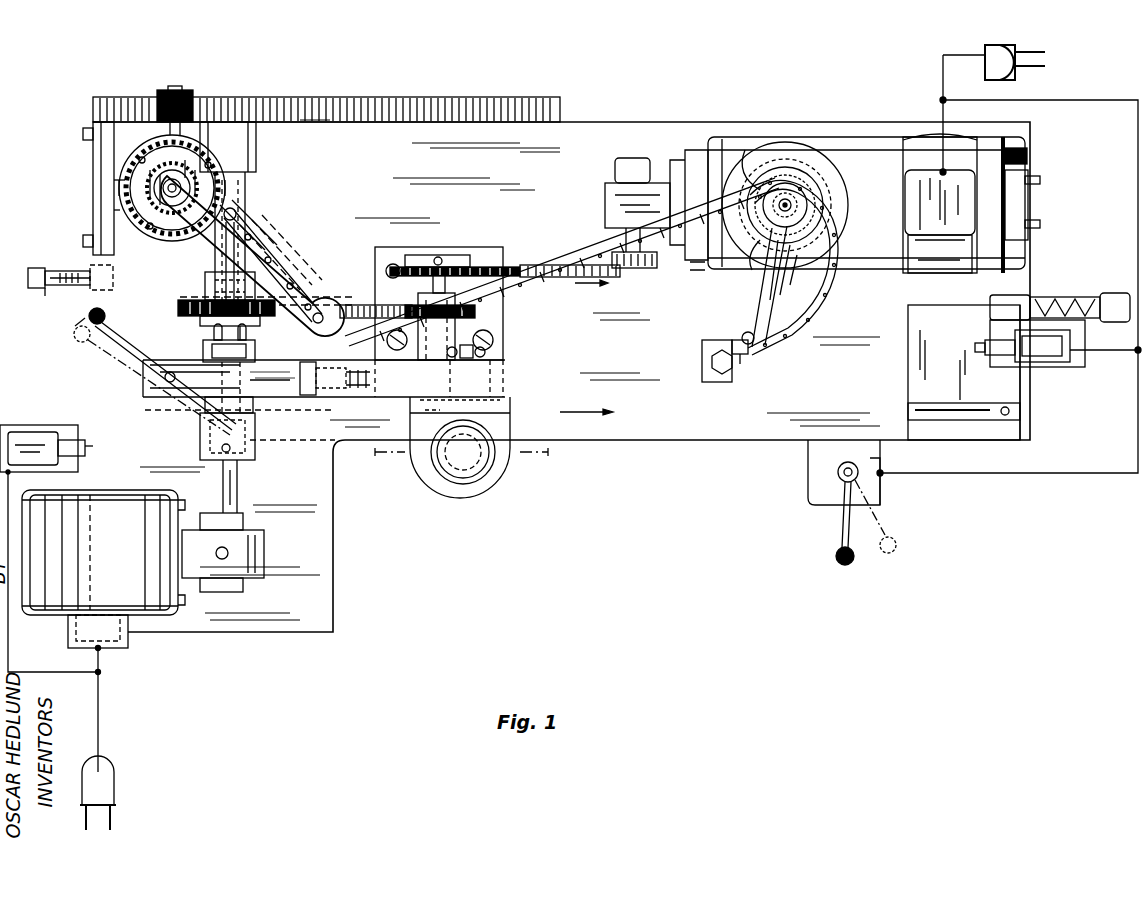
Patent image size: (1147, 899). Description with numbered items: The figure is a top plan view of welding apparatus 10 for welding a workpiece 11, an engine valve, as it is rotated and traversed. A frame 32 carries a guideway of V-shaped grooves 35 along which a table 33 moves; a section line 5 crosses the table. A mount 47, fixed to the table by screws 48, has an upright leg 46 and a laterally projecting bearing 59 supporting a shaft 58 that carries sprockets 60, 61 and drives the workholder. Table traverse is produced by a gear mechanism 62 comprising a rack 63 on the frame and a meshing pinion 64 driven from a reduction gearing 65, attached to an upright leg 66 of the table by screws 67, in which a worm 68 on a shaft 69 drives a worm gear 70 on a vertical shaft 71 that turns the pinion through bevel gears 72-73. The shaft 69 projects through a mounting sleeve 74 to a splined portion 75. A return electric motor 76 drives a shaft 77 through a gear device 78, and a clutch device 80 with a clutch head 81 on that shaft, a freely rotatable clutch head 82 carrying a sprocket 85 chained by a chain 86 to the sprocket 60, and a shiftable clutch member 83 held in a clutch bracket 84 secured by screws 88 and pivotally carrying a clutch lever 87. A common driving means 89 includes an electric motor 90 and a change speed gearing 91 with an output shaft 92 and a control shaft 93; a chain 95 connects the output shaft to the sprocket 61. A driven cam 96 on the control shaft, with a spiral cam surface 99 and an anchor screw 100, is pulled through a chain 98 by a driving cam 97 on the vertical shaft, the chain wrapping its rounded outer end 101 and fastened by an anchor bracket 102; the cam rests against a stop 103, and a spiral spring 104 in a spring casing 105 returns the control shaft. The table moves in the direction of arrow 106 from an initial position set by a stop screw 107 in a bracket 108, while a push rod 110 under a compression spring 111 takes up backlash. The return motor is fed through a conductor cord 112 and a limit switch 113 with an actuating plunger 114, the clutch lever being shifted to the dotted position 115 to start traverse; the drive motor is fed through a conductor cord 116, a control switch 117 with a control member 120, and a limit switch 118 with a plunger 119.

The section line 5- 5 is at (453, 450).
The welding apparatus 10 is at (678, 440).
The workpiece 11 is at (485, 480).
The frame 32 is at (1005, 435).
The table 33 is at (780, 432).
The V-shaped grooves 35 is at (1028, 162).
The upright leg 46 is at (503, 380).
The mount 47 is at (503, 320).
The screws 48 is at (486, 352).
The shaft 58 is at (390, 270).
The bearing 59 is at (493, 340).
The sprocket 60 is at (475, 308).
The sprocket 61 is at (462, 240).
The gear mechanism 62 is at (262, 152).
The rack 63 is at (420, 97).
The pinion 64 is at (193, 92).
The reduction gearing 65 is at (172, 230).
The upright leg 66 is at (95, 172).
The screws 67 is at (83, 134).
The worm 68 is at (248, 180).
The shaft 69 is at (205, 286).
The worm gear 70 is at (115, 210).
The vertical shaft 71 is at (175, 213).
The bevel gears 72-73 is at (115, 190).
The mounting sleeve 74 is at (215, 262).
The splined portion 75 is at (214, 333).
The electric motor 76 is at (110, 490).
The shaft 77 is at (237, 490).
The gear device 78 is at (264, 555).
The clutch device 80 is at (172, 420).
The clutch head 81 is at (200, 452).
The clutch head 82 is at (268, 280).
The clutch member 83 is at (255, 352).
The clutch bracket 84 is at (275, 392).
The sprocket 85 is at (178, 310).
The chain 86 is at (355, 305).
The clutch lever 87 is at (155, 377).
The screws 88 is at (300, 377).
The common driving means 89 is at (750, 133).
The electric motor 90 is at (970, 140).
The change speed gearing 91 is at (830, 140).
The output shaft 92 is at (657, 260).
The control shaft 93 is at (755, 275).
The chain 95 is at (521, 265).
The driven cam 96 is at (760, 300).
The driving cam 97 is at (330, 265).
The chain 98 is at (590, 240).
The cam surface 99 is at (850, 300).
The anchor screw 100 is at (742, 338).
The rounded outer end 101 is at (316, 312).
The anchor bracket 102 is at (248, 225).
The stop 103 is at (740, 360).
The spiral spring 104 is at (718, 272).
The spring casing 105 is at (745, 135).
The directional arrow 106 is at (595, 415).
The stop screw 107 is at (72, 290).
The bracket 108 is at (66, 262).
The push rod 110 is at (965, 308).
The compression spring 111 is at (1083, 288).
The conductor cord 112 is at (99, 733).
The limit switch 113 is at (35, 442).
The actuating plunger 114 is at (85, 448).
The dotted line position 115 is at (75, 334).
The conductor cord 116 is at (940, 80).
The control switch 117 is at (885, 480).
The limit switch 118 is at (1055, 350).
The plunger 119 is at (980, 350).
The control member 120 is at (843, 532).